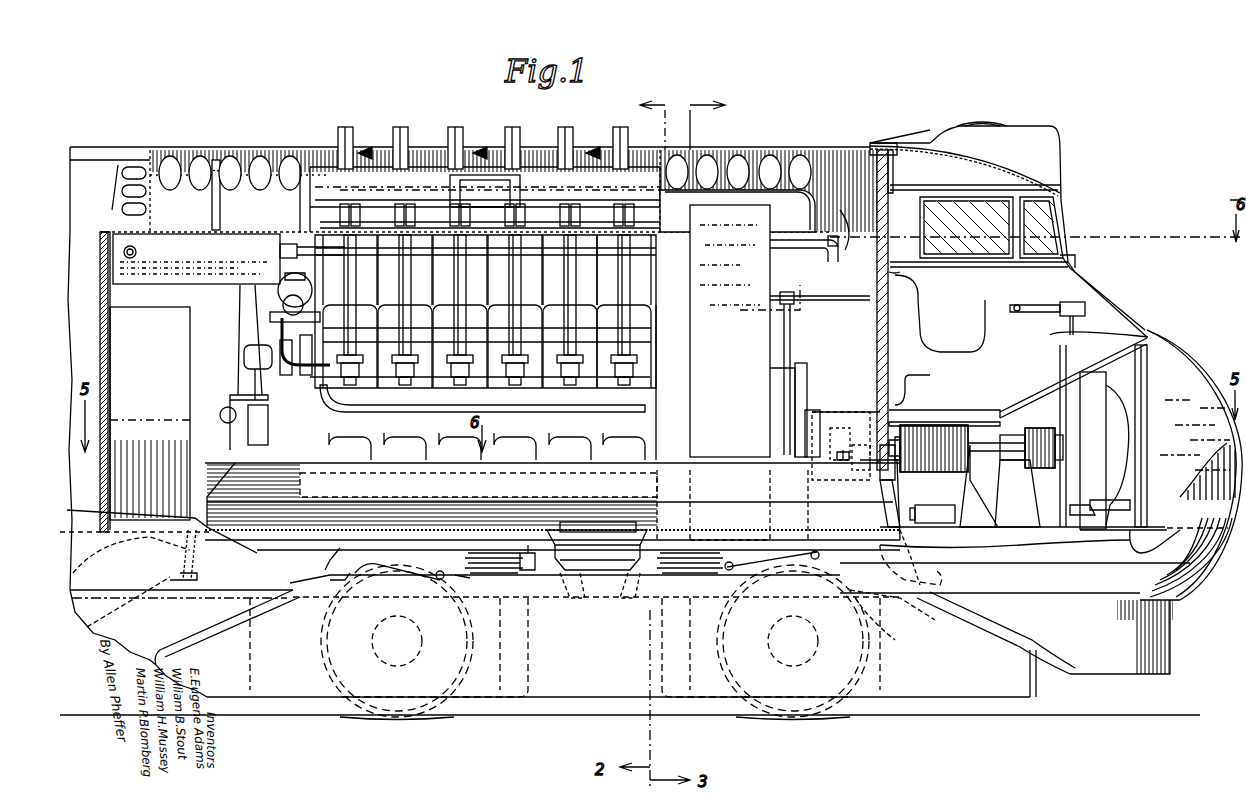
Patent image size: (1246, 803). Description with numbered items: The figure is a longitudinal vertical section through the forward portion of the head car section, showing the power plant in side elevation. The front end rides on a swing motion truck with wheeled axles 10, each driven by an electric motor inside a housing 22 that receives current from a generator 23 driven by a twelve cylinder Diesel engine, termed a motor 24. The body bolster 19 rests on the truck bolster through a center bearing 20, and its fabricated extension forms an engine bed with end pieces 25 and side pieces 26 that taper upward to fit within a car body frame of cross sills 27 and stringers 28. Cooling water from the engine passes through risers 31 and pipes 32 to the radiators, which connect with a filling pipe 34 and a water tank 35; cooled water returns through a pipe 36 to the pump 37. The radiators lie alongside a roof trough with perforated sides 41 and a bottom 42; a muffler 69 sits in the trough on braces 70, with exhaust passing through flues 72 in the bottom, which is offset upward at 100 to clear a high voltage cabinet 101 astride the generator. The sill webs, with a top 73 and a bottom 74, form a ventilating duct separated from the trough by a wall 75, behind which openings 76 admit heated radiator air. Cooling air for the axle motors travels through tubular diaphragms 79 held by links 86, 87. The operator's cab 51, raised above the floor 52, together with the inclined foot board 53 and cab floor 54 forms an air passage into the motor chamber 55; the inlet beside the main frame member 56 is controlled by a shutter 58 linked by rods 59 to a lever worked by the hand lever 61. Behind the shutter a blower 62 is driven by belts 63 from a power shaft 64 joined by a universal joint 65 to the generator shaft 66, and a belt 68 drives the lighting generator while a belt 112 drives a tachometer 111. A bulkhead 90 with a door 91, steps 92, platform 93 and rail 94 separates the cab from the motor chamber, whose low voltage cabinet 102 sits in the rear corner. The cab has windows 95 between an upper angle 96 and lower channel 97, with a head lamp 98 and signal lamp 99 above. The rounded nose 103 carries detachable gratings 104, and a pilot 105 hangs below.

The wheeled axles 10 is at (372, 648).
The body bolster 19 is at (580, 555).
The center bearing 20 is at (605, 565).
The housings 22 is at (525, 710).
The generator 23 is at (803, 385).
The motor 24 is at (480, 394).
The end pieces 25 is at (200, 563).
The side pieces 26 is at (333, 548).
The cross sills 27 is at (190, 552).
The stringers 28 is at (273, 543).
The risers 31 is at (500, 267).
The pipes 32 is at (808, 248).
The filling pipe 34 is at (217, 168).
The water tank 35 is at (160, 284).
The pipe 36 is at (240, 368).
The pump 37 is at (240, 428).
The perforated sides 41 is at (262, 156).
The bottom 42 is at (265, 232).
The operator's cab 51 is at (940, 340).
The floor 52 is at (1035, 530).
The inclined foot board 53 is at (1035, 395).
The floor 54 is at (950, 420).
The motor chamber 55 is at (666, 382).
The main frame member 56 is at (1195, 375).
The shutter 58 is at (1160, 366).
The rods 59 is at (1137, 543).
The hand lever 61 is at (1028, 312).
The blower 62 is at (1085, 466).
The belts 63 is at (1042, 428).
The power shaft 64 is at (985, 445).
The universal joint 65 is at (895, 430).
The generator shaft 66 is at (845, 445).
The belt 68 is at (930, 472).
The muffler 69 is at (428, 160).
The braces 70 is at (302, 165).
The flues 72 is at (645, 287).
The top 73 is at (88, 150).
The bottom 74 is at (78, 232).
The wall 75 is at (158, 160).
The openings 76 is at (120, 167).
The tubular diaphragms 79 is at (492, 565).
The links 86 is at (525, 575).
The links 87 is at (440, 585).
The bulkhead 90 is at (892, 300).
The door 91 is at (889, 352).
The steps 92 is at (845, 462).
The platform 93 is at (835, 410).
The rail 94 is at (791, 328).
The windows 95 is at (1048, 226).
The upper angle 96 is at (1060, 192).
The lower channel 97 is at (1080, 258).
The head lamp 98 is at (1062, 142).
The signal lamp 99 is at (990, 124).
The offset 100 is at (775, 180).
The high voltage cabinet 101 is at (718, 285).
The low voltage cabinet 102 is at (150, 413).
The rounded nose 103 is at (1233, 580).
The gratings 104 is at (1220, 500).
The pilot 105 is at (1155, 670).
The tachometer 111 is at (932, 514).
The belt 112 is at (965, 480).